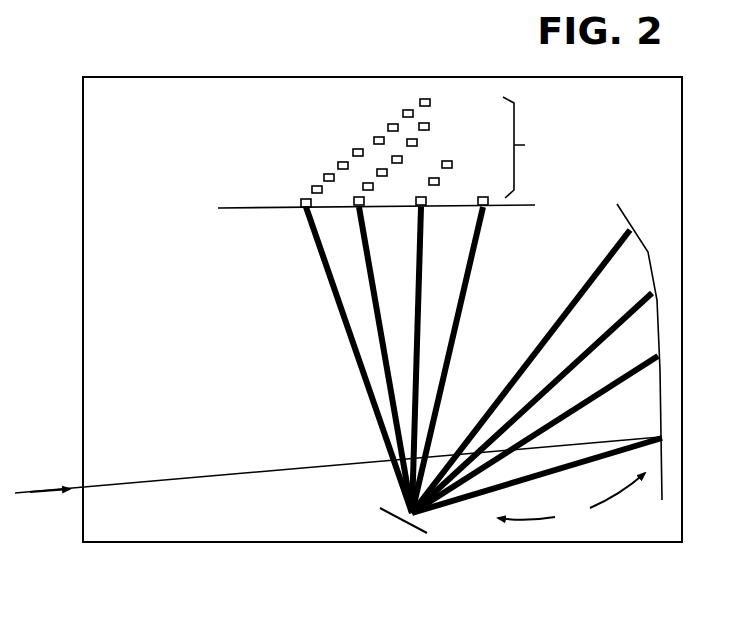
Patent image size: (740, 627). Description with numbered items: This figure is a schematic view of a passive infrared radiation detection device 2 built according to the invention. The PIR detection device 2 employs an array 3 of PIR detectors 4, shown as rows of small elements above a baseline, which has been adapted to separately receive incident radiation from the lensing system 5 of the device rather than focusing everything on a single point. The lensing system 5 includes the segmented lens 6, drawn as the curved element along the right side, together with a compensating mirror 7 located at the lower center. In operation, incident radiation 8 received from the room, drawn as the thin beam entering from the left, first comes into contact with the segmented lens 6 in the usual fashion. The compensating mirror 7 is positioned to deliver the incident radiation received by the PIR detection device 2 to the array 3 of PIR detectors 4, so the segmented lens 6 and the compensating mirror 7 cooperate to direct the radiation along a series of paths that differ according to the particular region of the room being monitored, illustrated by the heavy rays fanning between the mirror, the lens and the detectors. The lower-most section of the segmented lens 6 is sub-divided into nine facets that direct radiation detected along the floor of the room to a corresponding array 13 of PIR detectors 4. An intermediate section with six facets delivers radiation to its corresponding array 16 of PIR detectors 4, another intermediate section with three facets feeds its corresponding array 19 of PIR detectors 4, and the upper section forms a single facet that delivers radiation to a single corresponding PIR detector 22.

The PIR detection device 2 is at (143, 77).
The array 3 is at (525, 145).
The PIR detectors 4 is at (418, 145).
The lensing system 5 is at (571, 501).
The segmented lens 6 is at (657, 316).
The compensating mirror 7 is at (385, 518).
The incident radiation 8 is at (30, 492).
The array 13 is at (441, 93).
The array 16 is at (440, 126).
The array 19 is at (462, 168).
The PIR detector 22 is at (487, 209).